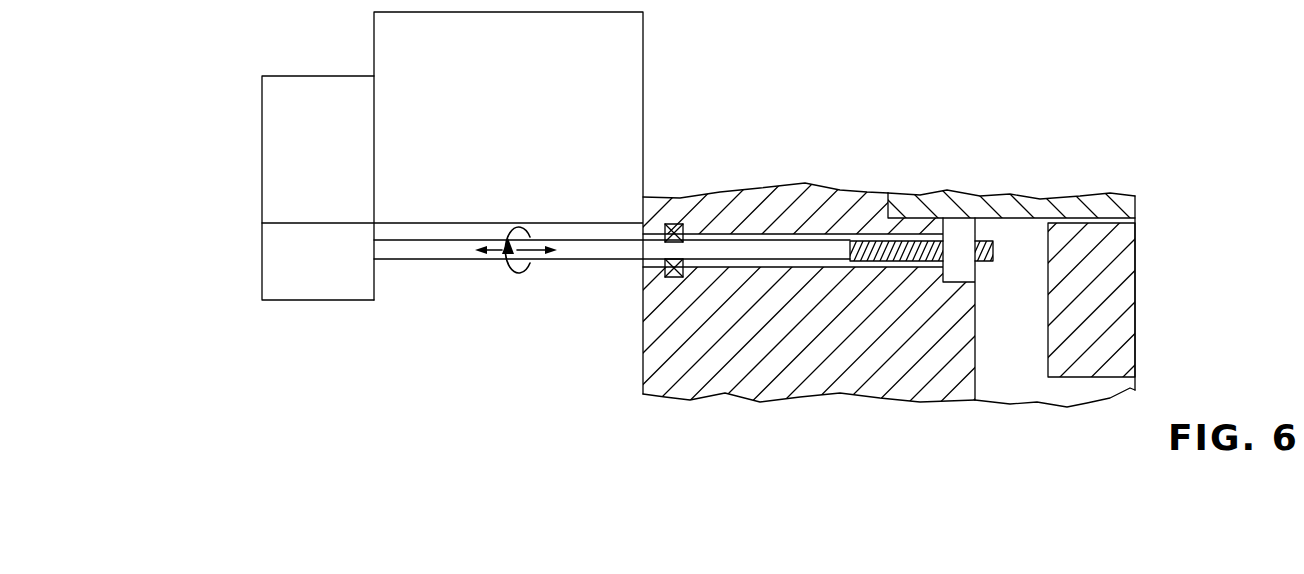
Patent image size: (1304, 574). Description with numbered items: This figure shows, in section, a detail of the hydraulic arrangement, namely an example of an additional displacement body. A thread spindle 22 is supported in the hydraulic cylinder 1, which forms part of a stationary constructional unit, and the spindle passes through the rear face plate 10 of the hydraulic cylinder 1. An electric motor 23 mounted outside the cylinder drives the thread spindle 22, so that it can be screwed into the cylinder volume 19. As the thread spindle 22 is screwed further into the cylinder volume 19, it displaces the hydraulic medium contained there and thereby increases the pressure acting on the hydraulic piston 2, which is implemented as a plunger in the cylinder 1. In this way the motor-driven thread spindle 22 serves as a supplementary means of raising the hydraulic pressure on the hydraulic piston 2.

The hydraulic cylinder 1 is at (979, 185).
The hydraulic piston 2 is at (1120, 310).
The rear face plate 10 is at (712, 368).
The cylinder volume 19 is at (1067, 255).
The thread spindle 22 is at (747, 250).
The electric motor 23 is at (330, 268).